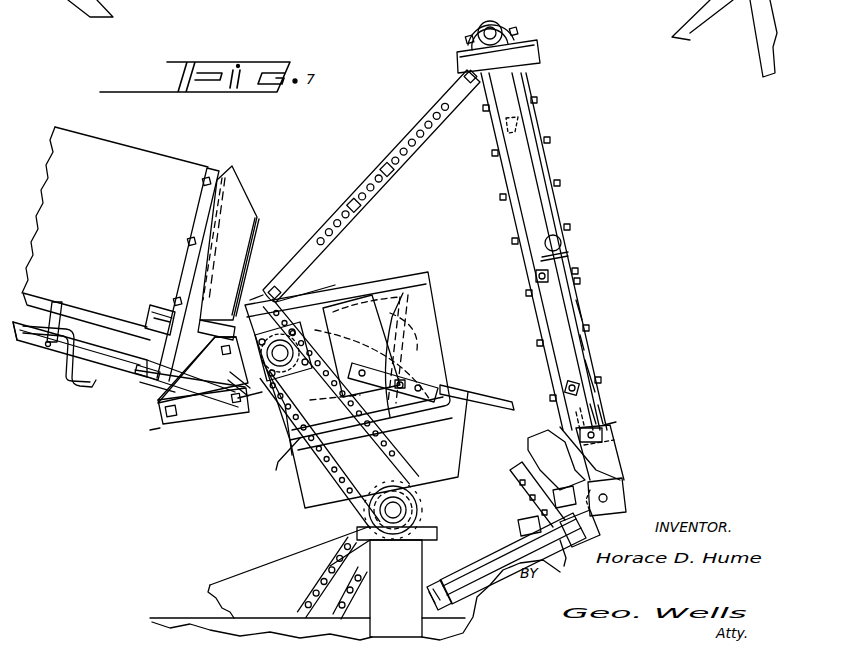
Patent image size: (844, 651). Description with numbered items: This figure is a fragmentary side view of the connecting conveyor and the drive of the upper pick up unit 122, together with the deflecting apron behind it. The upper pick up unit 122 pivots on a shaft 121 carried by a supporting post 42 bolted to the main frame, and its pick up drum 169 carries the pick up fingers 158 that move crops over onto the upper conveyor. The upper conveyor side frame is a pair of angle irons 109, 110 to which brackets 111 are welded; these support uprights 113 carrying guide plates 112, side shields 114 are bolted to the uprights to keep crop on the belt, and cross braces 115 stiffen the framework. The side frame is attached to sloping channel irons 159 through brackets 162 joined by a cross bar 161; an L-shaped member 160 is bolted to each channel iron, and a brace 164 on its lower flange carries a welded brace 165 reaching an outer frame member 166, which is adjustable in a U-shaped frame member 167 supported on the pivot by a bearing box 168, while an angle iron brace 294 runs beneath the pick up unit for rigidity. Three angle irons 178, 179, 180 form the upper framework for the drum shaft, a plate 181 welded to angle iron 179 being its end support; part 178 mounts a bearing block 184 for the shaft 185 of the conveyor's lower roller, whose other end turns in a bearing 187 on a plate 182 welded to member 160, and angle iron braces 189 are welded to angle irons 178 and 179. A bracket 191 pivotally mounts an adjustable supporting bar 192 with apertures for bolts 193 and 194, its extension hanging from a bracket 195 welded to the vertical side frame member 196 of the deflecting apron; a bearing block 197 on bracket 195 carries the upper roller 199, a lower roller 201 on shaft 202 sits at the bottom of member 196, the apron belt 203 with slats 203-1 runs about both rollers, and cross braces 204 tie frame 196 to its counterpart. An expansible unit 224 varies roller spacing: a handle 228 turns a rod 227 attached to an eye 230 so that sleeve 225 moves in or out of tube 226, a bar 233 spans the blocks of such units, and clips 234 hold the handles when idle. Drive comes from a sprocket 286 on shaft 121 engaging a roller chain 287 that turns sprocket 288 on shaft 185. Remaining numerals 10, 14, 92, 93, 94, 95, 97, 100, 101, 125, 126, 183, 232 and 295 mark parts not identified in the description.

The section line 10 is at (246, 134).
The ground 14 is at (184, 618).
The supporting post 42 is at (412, 557).
The bracket 92 is at (558, 492).
The bracket arm 93 is at (520, 470).
The block 94 is at (518, 520).
The frame member 95 is at (262, 552).
The cylinder anchor 97 is at (594, 537).
The link 100 is at (575, 432).
The pivot 101 is at (622, 498).
The angle iron 109 is at (100, 378).
The angle iron 110 is at (40, 300).
The brackets 111 is at (100, 390).
The guide plates 112 is at (172, 305).
The uprights 113 is at (225, 170).
The side shields 114 is at (237, 210).
The cross braces 115 is at (170, 410).
The shaft 121 is at (395, 510).
The upper pick up unit 122 is at (452, 274).
The member 125 is at (757, 23).
The member 126 is at (40, 0).
The pick up fingers 158 is at (410, 290).
The channel irons 159 is at (162, 380).
The L-shaped member 160 is at (212, 420).
The cross bar 161 is at (147, 374).
The brackets 162 is at (165, 395).
The brace 164 is at (146, 425).
The brace 165 is at (215, 425).
The outer frame member 166 is at (400, 424).
The U-shaped frame member 167 is at (298, 455).
The bearing box 168 is at (412, 486).
The pick up drum 169 is at (392, 320).
The angle iron 178 is at (318, 300).
The angle iron 179 is at (338, 306).
The angle iron 180 is at (446, 368).
The plate 181 is at (390, 292).
The plate 182 is at (262, 400).
The plate 183 is at (235, 308).
The bearing block 184 is at (282, 465).
The shaft 185 is at (268, 400).
The bearing 187 is at (243, 415).
The angle iron brace 189 is at (336, 244).
The bracket 191 is at (272, 288).
The adjustable supporting bar 192 is at (305, 238).
The bolts 193 is at (350, 198).
The bolts 194 is at (384, 160).
The bracket 195 is at (530, 66).
The vertical side frame member 196 is at (530, 180).
The bearing block 197 is at (528, 40).
The roller 199 is at (505, 20).
The lower roller 201 is at (578, 422).
The shaft 202 is at (620, 430).
The deflecting apron belt 203 is at (562, 206).
The slats 203-1 is at (580, 284).
The cross braces 204 is at (540, 112).
The expansible unit 224 is at (490, 543).
The sleeve 225 is at (600, 414).
The tube 226 is at (590, 352).
The rod 227 is at (22, 356).
The handle 228 is at (66, 382).
The eye 230 is at (568, 244).
The block 232 is at (610, 436).
The bar 233 is at (612, 470).
The clips 234 is at (66, 328).
The sprocket 286 is at (362, 514).
The roller chain 287 is at (350, 478).
The sprocket 288 is at (278, 400).
The angle iron brace 294 is at (536, 280).
The bolt 295 is at (565, 378).